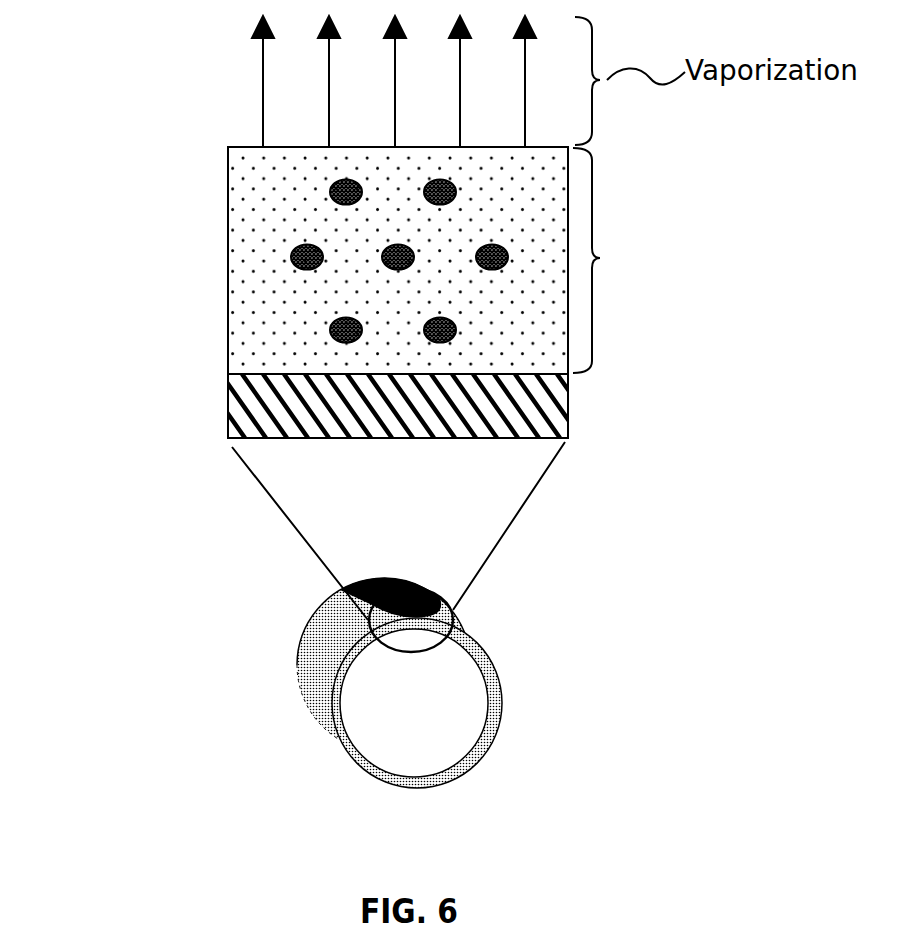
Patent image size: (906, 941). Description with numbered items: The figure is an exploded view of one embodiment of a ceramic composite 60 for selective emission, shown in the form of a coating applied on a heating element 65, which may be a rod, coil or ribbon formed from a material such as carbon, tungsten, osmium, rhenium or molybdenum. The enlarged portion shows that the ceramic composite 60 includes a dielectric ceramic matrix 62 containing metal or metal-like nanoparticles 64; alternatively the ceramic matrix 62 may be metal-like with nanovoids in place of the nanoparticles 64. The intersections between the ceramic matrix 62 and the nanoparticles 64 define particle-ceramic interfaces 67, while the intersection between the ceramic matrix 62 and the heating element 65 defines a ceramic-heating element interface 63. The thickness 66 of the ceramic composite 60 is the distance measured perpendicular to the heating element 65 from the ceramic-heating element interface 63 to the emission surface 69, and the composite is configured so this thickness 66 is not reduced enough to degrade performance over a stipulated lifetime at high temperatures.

The ceramic composite 60 is at (330, 646).
The ceramic matrix 62 is at (268, 303).
The ceramic-heating element interface 63 is at (230, 375).
The nanoparticles 64 is at (292, 262).
The heating element 65 is at (570, 405).
The thickness 66 is at (605, 258).
The particle-ceramic interfaces 67 is at (401, 247).
The emission surface 69 is at (243, 147).